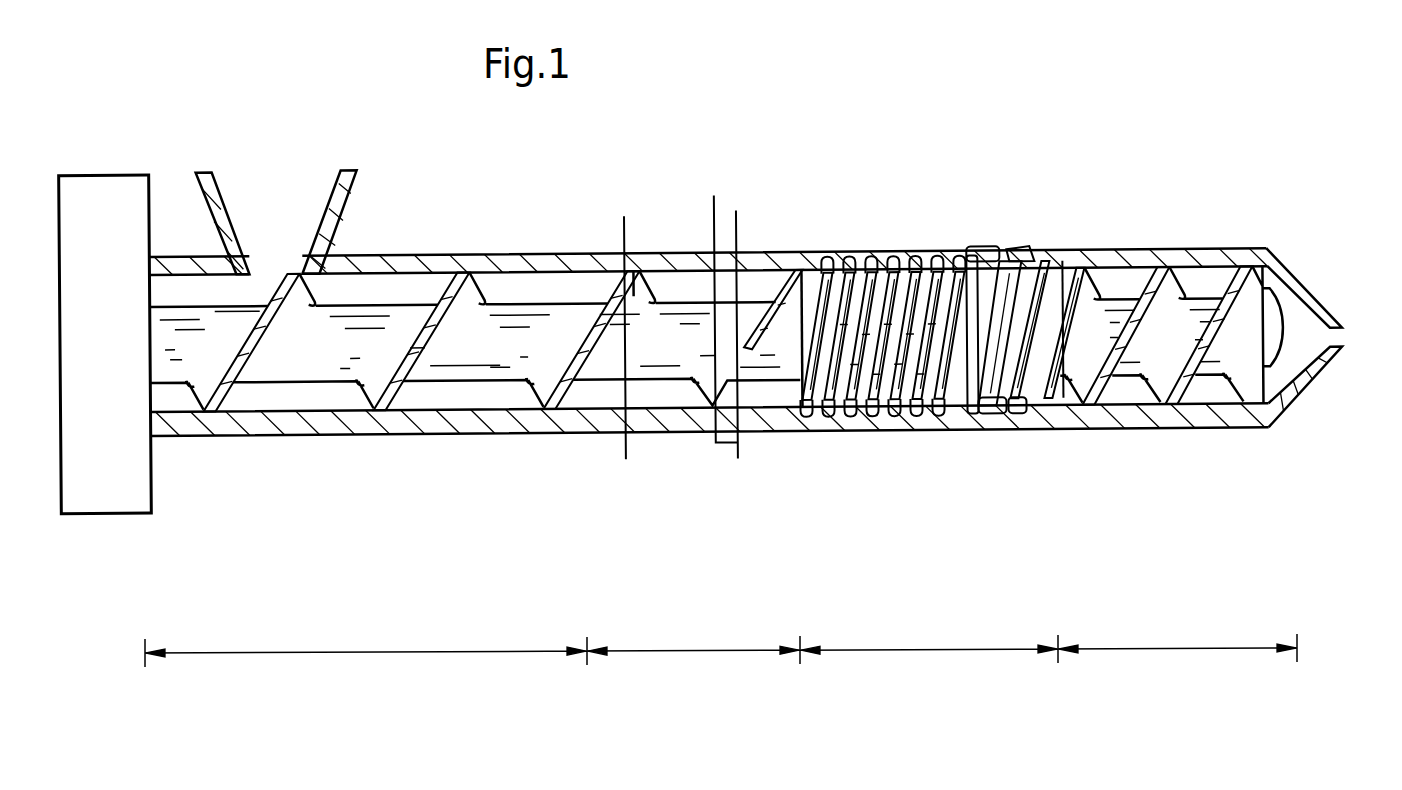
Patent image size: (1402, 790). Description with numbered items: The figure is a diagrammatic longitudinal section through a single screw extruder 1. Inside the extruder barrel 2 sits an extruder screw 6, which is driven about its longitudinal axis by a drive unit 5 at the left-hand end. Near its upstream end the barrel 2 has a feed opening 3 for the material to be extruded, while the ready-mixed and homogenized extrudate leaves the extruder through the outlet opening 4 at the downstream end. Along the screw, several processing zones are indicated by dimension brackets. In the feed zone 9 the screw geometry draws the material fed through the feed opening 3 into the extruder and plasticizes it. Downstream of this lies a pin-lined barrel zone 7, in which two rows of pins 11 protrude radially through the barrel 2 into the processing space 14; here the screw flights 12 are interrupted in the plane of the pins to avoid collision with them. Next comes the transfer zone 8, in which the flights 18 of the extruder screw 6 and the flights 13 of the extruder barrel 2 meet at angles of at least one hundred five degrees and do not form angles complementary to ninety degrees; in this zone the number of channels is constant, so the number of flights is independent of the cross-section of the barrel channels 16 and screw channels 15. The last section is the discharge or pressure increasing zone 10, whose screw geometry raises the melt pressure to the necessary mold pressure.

The single screw extruder 1 is at (1090, 220).
The extruder barrel 2 is at (1217, 417).
The feed opening 3 is at (273, 232).
The outlet opening 4 is at (1342, 340).
The drive unit 5 is at (77, 338).
The extruder screw 6 is at (195, 328).
The pin-lined barrel zone 7 is at (693, 666).
The transfer zone 8 is at (929, 665).
The feed zone 9 is at (366, 668).
The discharge or pressure increasing zone 10 is at (1177, 664).
The pins 11 is at (627, 232).
The screw flights 12 is at (542, 390).
The flights of the extruder barrel 13 is at (945, 262).
The processing space 14 is at (347, 392).
The screw channels 15 is at (800, 413).
The barrel channels 16 is at (987, 265).
The flights of the extruder screw 18 is at (1023, 387).